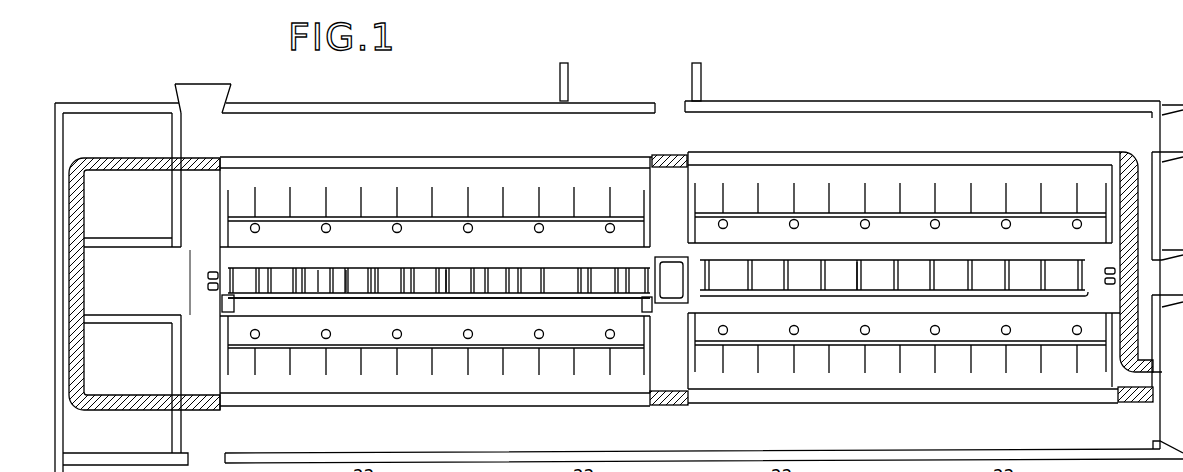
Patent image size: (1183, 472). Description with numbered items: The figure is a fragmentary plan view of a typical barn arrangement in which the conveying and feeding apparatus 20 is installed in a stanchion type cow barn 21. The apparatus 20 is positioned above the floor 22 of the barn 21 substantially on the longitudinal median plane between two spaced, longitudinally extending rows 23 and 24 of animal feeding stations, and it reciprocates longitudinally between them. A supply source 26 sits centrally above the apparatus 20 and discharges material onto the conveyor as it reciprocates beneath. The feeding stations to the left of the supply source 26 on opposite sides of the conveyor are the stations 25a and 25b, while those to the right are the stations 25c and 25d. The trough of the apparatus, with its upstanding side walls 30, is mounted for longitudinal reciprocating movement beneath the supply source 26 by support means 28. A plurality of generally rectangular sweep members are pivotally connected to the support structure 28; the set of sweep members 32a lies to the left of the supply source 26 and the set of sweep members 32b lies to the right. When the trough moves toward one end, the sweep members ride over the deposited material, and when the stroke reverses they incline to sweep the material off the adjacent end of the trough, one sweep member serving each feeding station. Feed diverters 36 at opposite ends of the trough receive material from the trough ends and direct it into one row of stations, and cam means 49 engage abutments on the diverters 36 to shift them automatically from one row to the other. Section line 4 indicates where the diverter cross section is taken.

The section line 4- 4 is at (213, 261).
The conveying and feeding apparatus 20 is at (405, 266).
The stanchion type cow barn 21 is at (860, 100).
The floor 22 is at (553, 316).
The row of animal feeding stations 23 is at (221, 228).
The row of animal feeding stations 24 is at (221, 353).
The animal feeding stations 25a is at (450, 372).
The animal feeding stations 25b is at (415, 192).
The animal feeding stations 25c is at (915, 372).
The animal feeding stations 25d is at (935, 190).
The supply source 26 is at (704, 263).
The support means 28 is at (930, 270).
The side walls 30 is at (446, 291).
The sweep members 32a is at (385, 283).
The sweep members 32b is at (852, 272).
The feed diverters 36 is at (215, 310).
The cam means 49 is at (216, 270).